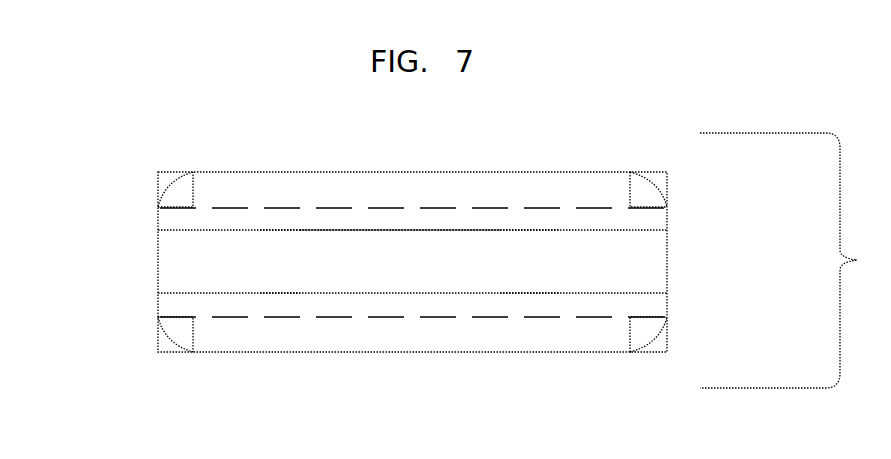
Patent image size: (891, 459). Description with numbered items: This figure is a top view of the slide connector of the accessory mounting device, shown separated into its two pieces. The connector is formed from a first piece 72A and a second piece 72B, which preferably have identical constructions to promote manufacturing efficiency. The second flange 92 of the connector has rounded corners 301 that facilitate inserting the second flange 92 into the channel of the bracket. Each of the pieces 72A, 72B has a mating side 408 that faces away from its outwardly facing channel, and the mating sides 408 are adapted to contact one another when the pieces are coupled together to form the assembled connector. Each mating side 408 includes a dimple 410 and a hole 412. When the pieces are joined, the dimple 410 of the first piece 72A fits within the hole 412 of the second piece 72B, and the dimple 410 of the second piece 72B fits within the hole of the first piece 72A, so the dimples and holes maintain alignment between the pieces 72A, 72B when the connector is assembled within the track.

The second flange 92 is at (371, 190).
The first piece 72A is at (157, 221).
The second piece 72B is at (157, 300).
The rounded corners 301 is at (169, 185).
The mating sides 408 is at (395, 232).
The dimple 410 is at (290, 230).
The hole 412 is at (285, 295).